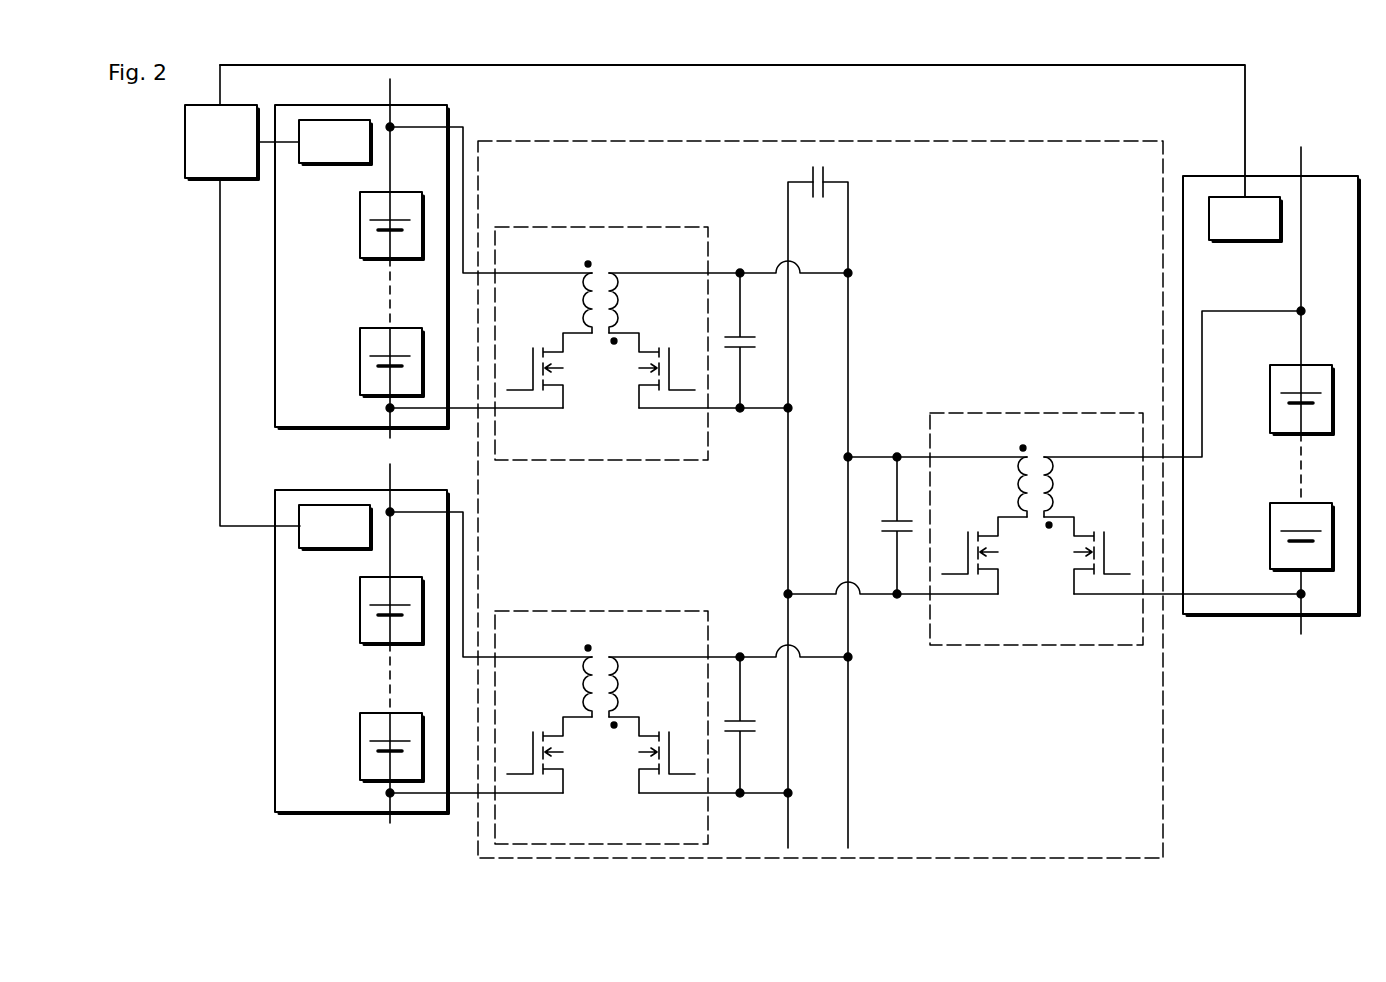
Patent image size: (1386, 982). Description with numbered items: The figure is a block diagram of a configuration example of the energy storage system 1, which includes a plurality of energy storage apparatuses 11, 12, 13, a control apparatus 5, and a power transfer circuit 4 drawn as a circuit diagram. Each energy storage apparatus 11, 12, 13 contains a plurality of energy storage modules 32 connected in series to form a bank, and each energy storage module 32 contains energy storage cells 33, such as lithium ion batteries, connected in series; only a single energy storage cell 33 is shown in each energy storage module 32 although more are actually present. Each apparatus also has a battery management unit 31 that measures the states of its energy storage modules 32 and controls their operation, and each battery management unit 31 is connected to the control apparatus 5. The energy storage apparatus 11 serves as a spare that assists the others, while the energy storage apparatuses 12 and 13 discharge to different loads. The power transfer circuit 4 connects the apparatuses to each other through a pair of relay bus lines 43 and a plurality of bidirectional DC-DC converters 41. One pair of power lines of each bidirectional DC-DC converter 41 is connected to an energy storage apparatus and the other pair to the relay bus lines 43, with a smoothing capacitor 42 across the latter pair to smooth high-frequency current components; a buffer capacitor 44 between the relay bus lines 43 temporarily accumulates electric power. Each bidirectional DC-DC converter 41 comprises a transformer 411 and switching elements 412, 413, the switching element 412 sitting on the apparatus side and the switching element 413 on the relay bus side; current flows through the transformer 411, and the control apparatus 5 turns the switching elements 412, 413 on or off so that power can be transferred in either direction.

The energy storage system 1 is at (1353, 85).
The power transfer circuit 4 is at (585, 141).
The control apparatus 5 is at (232, 104).
The energy storage apparatus 11 is at (1325, 176).
The energy storage apparatus 12 is at (312, 104).
The energy storage apparatus 13 is at (312, 489).
The battery management unit 31 is at (333, 164).
The energy storage module 32 is at (400, 192).
The energy storage cell 33 is at (360, 231).
The bidirectional DC-DC converter 41 is at (643, 227).
The smoothing capacitor 42 is at (748, 332).
The relay bus lines 43 is at (788, 182).
The buffer capacitor 44 is at (830, 176).
The transformer 411 is at (601, 332).
The switching element 412 is at (563, 377).
The switching element 413 is at (643, 373).